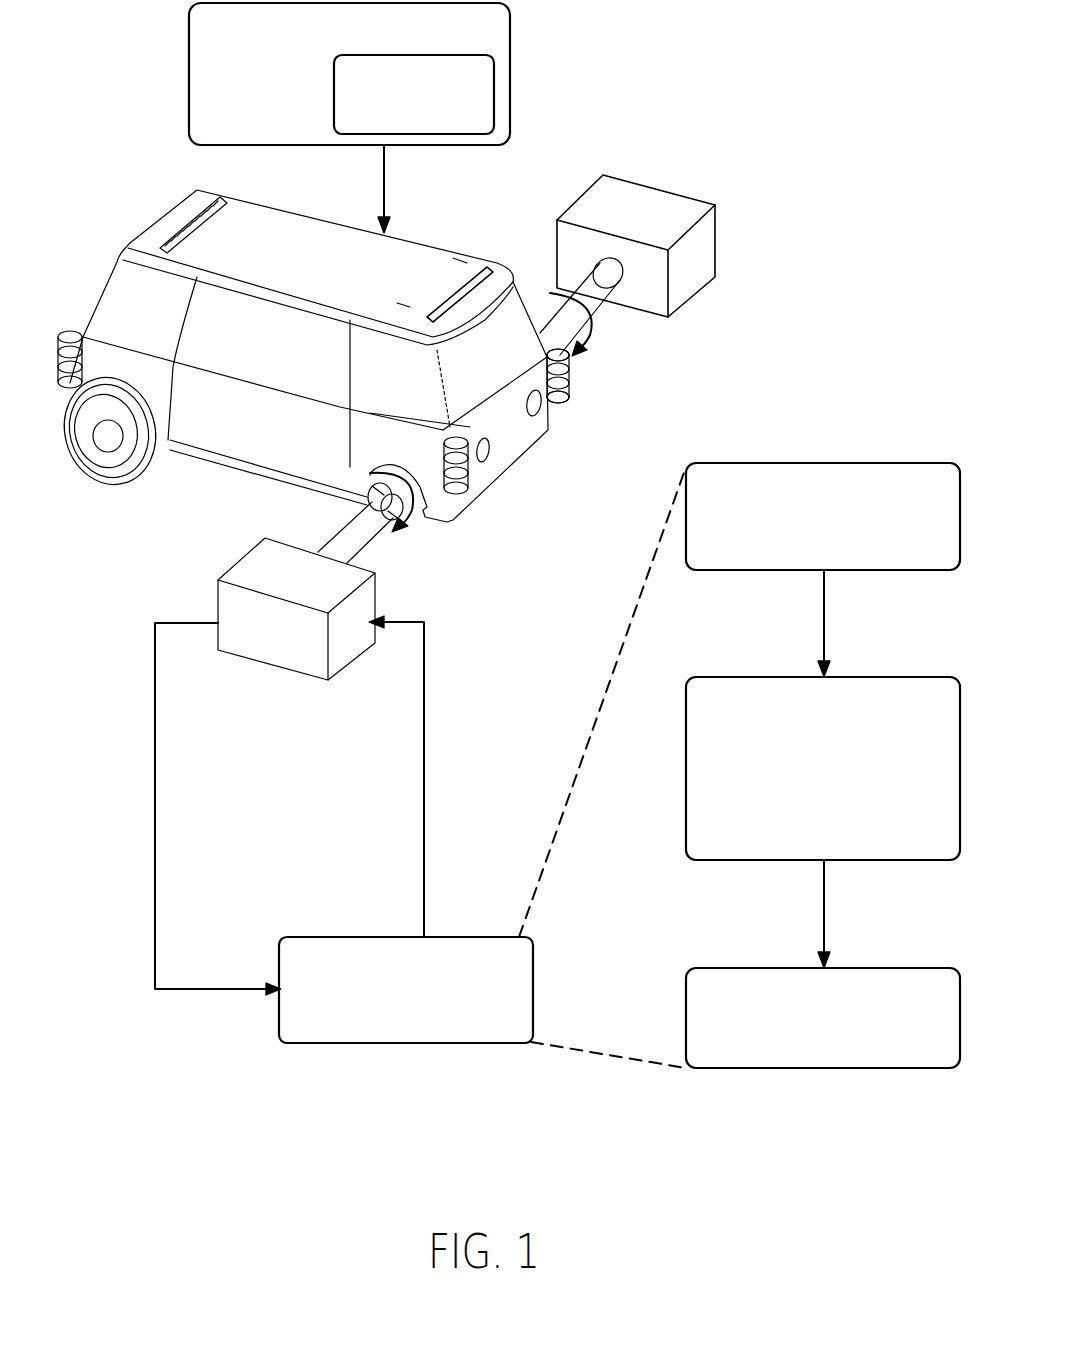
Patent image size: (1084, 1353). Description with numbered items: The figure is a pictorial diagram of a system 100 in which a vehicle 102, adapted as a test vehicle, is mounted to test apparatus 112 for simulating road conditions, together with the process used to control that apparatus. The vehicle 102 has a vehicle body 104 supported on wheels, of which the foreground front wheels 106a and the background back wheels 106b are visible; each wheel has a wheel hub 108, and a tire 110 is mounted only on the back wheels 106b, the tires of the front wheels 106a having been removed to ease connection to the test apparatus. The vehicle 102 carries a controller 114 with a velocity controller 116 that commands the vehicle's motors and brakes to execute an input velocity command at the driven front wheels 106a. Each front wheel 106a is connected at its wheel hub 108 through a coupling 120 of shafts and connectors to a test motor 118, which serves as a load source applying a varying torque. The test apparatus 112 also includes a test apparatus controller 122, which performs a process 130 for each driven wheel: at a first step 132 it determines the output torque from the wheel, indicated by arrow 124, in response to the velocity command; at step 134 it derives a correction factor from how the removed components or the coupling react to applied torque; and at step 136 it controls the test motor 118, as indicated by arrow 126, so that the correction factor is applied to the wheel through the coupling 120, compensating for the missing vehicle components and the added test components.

The system 100 is at (812, 104).
The vehicle 102 is at (128, 197).
The vehicle body 104 is at (467, 253).
The front wheels 106a is at (588, 373).
The back wheels 106b is at (116, 493).
The wheel hub 108 is at (97, 442).
The tire 110 is at (153, 460).
The test apparatus 112 is at (137, 805).
The controller 114 is at (189, 88).
The velocity controller 116 is at (334, 97).
The test motor 118 is at (715, 255).
The coupling 120 is at (597, 298).
The test apparatus controller 122 is at (279, 1027).
The arrow indicating output torque 124 is at (155, 757).
The arrow indicating correction factor 126 is at (424, 795).
The process 130 is at (887, 383).
The first step 132 is at (686, 518).
The step 134 is at (686, 822).
The step 136 is at (688, 1037).